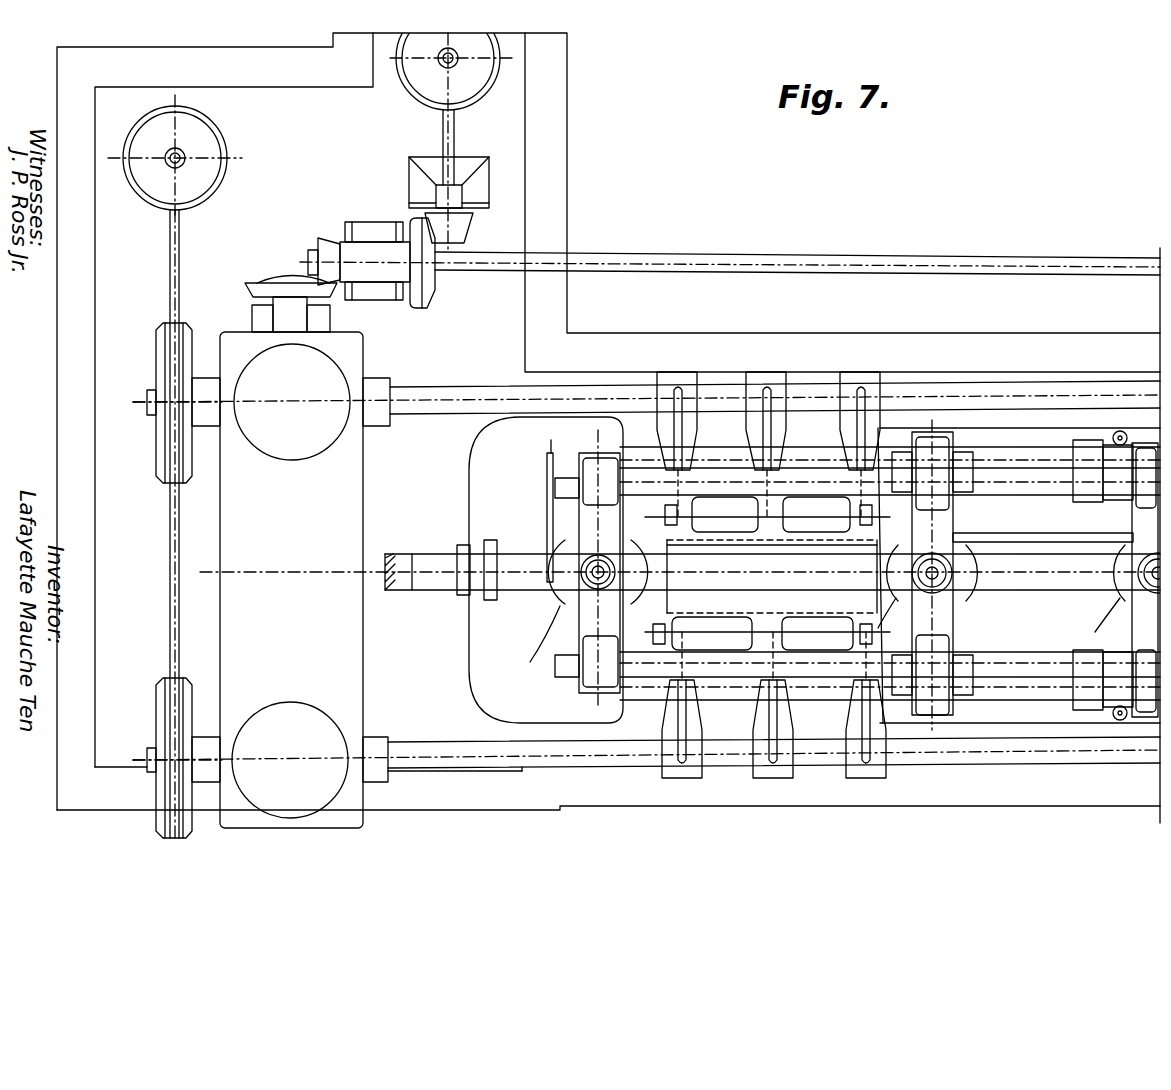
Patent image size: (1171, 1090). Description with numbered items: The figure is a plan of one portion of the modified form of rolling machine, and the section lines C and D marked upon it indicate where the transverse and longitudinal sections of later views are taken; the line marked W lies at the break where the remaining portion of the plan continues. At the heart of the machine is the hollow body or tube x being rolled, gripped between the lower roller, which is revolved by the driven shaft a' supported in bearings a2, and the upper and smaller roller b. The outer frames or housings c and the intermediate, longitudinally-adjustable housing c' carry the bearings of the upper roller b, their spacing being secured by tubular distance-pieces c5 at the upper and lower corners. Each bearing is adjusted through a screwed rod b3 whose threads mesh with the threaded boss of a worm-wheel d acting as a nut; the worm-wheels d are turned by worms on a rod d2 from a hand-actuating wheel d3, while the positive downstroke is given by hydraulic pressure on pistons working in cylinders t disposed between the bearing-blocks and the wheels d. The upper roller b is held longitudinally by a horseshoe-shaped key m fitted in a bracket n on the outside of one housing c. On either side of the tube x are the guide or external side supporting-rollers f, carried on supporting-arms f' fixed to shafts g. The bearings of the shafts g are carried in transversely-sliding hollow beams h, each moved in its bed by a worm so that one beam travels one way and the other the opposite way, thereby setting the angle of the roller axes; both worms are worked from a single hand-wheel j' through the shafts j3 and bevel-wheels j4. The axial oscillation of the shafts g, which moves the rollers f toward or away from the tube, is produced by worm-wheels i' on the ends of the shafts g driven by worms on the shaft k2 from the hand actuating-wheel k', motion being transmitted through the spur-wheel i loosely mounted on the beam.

The section line D D is at (292, 845).
The section line C C is at (643, 333).
The section line W- W is at (1149, 535).
The hand actuating-wheel k' is at (181, 155).
The shaft k2 is at (172, 268).
The worm-wheel i' is at (170, 403).
The spur-wheel i is at (173, 749).
The hollow beam or frame h is at (305, 562).
The bevel-wheels j4 is at (454, 226).
The hand-wheel j' is at (445, 59).
The shaft j3 is at (455, 129).
The shaft g is at (442, 398).
The bracket n is at (546, 570).
The upper roller b is at (680, 570).
The driven shaft a' is at (400, 587).
The horseshoe-shaped key m is at (497, 558).
The hand-actuating wheel d3 is at (549, 518).
The outer frame or housing c is at (857, 573).
The screwed rod b3 is at (597, 582).
The worm-wheel d is at (562, 562).
The cylinder t is at (548, 620).
The tubular distance-piece c5 is at (1013, 462).
The intermediate housing or frame c' is at (932, 575).
The bearings a2 is at (1062, 537).
The guide or external side supporting-roller f is at (767, 530).
The supporting-arm f' is at (771, 575).
The hollow body or tube x is at (772, 577).
The rod d2 is at (712, 537).